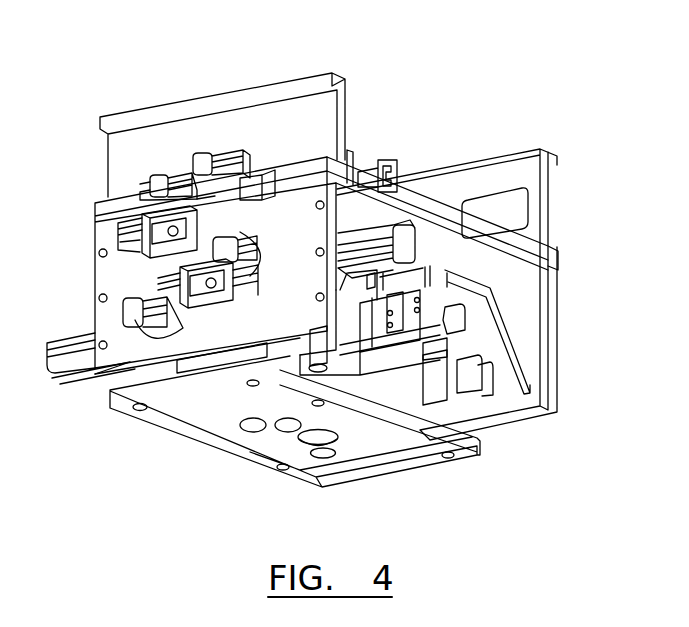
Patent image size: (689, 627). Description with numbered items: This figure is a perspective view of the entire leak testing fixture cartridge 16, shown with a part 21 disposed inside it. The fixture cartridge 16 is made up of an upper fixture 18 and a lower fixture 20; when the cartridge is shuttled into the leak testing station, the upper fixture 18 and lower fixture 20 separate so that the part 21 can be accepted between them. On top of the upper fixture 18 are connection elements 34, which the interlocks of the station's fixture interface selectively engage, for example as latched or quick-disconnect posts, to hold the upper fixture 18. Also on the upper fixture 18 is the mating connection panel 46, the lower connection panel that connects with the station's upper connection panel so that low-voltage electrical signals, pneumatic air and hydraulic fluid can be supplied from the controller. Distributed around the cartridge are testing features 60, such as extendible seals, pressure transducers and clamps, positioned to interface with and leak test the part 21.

The leak testing fixture cartridge 16 is at (329, 256).
The upper fixture 18 is at (110, 268).
The lower fixture 20 is at (225, 430).
The part 21 is at (403, 318).
The connection element 34 is at (243, 163).
The mating connection panel 46 is at (373, 163).
The testing features 60 is at (407, 240).